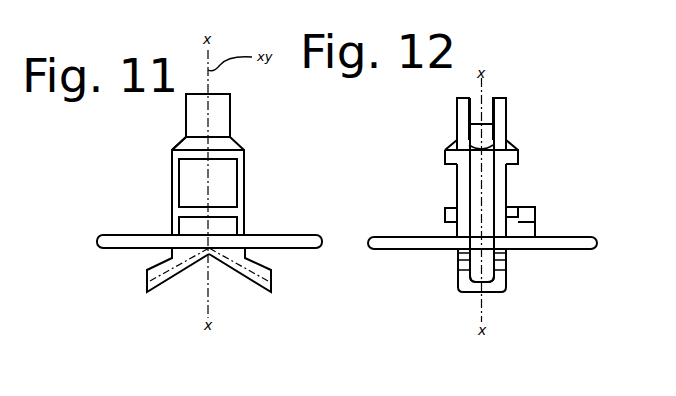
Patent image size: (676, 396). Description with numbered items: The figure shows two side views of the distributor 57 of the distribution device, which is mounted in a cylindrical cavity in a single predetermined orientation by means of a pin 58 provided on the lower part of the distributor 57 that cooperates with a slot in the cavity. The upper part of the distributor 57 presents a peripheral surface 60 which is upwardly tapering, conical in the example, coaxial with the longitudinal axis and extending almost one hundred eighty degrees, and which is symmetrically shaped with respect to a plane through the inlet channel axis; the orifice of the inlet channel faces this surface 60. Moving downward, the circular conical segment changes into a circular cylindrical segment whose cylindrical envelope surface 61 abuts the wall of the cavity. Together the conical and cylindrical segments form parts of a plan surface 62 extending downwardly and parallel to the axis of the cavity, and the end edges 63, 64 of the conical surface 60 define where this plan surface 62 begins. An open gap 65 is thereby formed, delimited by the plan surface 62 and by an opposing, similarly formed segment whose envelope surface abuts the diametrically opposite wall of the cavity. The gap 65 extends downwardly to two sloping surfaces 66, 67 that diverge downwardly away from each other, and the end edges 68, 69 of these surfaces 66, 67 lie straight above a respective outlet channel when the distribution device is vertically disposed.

In FIG. 11, the distributor 57 is at (240, 102).
In FIG. 12, the distributor 57 is at (442, 115).
In FIG. 12, the pin 58 is at (531, 208).
In FIG. 11, the peripheral surface 60 is at (215, 143).
In FIG. 12, the peripheral surface 60 is at (453, 145).
In FIG. 11, the cylindrical envelope surface 61 is at (222, 153).
In FIG. 12, the cylindrical envelope surface 61 is at (447, 157).
In FIG. 12, the plan surface 62 is at (471, 118).
In FIG. 11, the end edge of the conical surface 63 is at (181, 141).
In FIG. 11, the end edge of the conical surface 64 is at (232, 139).
In FIG. 12, the end edge of the conical surface 64 is at (505, 146).
In FIG. 12, the gap 65 is at (485, 187).
In FIG. 11, the sloping surface 66 is at (172, 265).
In FIG. 11, the sloping surface 67 is at (247, 267).
In FIG. 12, the sloping surface 67 is at (487, 262).
In FIG. 11, the end edge of the sloping surface 68 is at (147, 279).
In FIG. 11, the end edge of the sloping surface 69 is at (271, 281).
In FIG. 12, the end edge of the sloping surface 69 is at (487, 283).